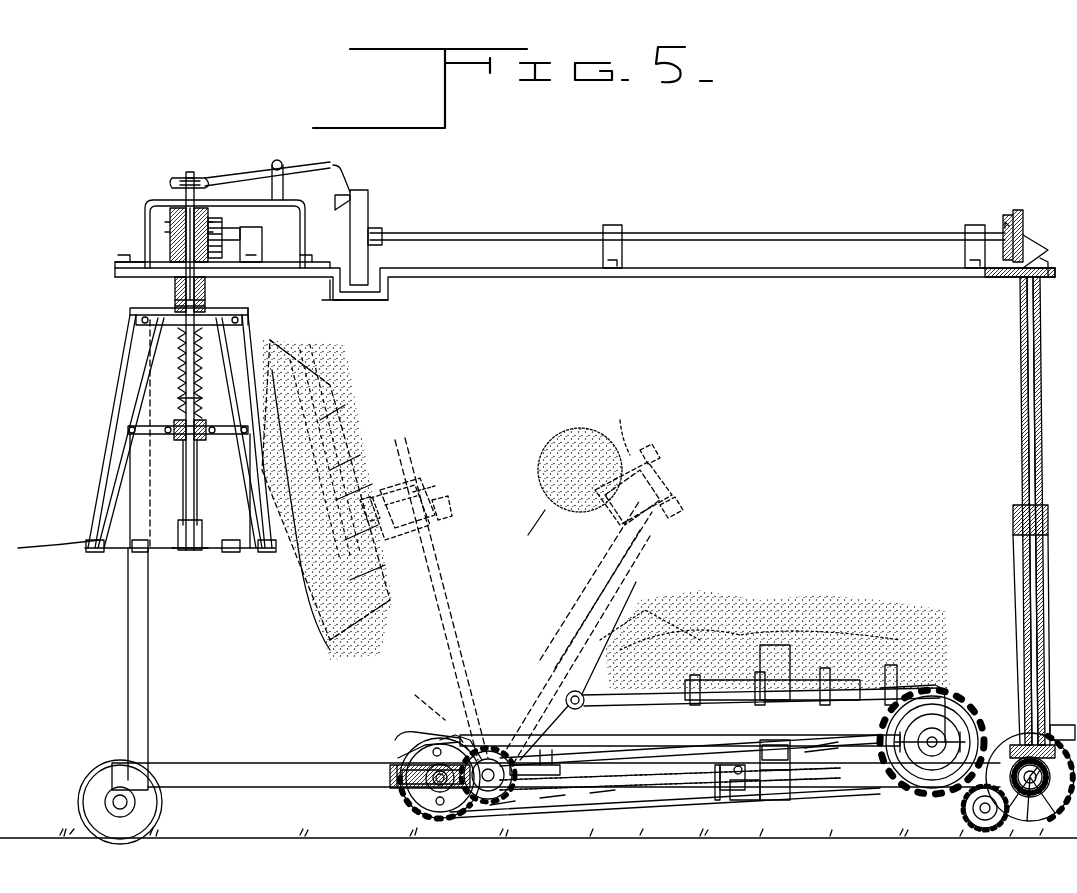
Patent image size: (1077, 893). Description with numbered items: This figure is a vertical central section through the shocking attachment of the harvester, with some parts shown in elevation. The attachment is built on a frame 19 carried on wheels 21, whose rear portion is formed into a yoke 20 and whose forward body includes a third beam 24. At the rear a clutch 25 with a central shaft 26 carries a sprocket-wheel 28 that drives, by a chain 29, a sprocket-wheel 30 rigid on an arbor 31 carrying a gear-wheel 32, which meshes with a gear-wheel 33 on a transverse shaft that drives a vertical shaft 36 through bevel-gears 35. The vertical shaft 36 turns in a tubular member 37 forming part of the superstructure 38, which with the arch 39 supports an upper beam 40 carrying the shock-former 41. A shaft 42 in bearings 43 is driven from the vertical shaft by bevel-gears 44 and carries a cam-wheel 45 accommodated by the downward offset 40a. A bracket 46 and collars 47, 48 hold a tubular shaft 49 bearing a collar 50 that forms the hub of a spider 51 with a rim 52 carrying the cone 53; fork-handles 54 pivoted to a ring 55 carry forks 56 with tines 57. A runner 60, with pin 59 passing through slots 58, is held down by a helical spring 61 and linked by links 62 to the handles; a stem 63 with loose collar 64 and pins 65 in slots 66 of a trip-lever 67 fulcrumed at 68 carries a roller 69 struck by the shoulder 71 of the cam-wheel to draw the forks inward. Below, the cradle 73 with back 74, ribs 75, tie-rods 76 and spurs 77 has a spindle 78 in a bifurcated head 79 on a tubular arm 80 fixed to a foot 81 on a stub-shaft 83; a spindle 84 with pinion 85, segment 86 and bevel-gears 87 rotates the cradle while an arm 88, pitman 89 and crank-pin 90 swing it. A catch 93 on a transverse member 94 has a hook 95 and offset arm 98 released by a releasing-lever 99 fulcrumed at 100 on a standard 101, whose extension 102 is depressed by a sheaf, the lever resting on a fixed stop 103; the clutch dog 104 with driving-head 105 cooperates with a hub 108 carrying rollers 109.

The frame 19 is at (410, 780).
The yoke 20 is at (258, 762).
The wheels 21 is at (78, 800).
The third beam 24 is at (578, 798).
The clutch 25 is at (420, 748).
The central shaft 26 is at (430, 783).
The sprocket-wheel 28 is at (398, 782).
The chain 29 is at (760, 790).
The sprocket-wheel 30 is at (900, 770).
The arbor 31 is at (922, 748).
The gear-wheel 32 is at (895, 690).
The gear-wheel 33 is at (988, 826).
The bevel-gears 35 is at (1012, 740).
The vertical shaft 36 is at (1020, 360).
The tubular member 37 is at (1020, 452).
The superstructure 38 is at (150, 636).
The arch 39 is at (136, 668).
The upper beam 40 is at (672, 278).
The downward offset 40a is at (390, 298).
The shock-former 41 is at (112, 388).
The shaft 42 is at (712, 230).
The bearings 43 is at (612, 224).
The bevel-gears 44 is at (1020, 212).
The cam-wheel 45 is at (370, 212).
The bracket 46 is at (142, 218).
The collar 47 is at (170, 222).
The collar 48 is at (210, 275).
The tubular guide or shaft 49 is at (180, 552).
The collar 50 is at (140, 320).
The spider 51 is at (150, 312).
The rim or band 52 is at (250, 318).
The cone or apron 53 is at (126, 468).
The fork-handles 54 is at (108, 440).
The ring 55 is at (130, 312).
The forks 56 is at (92, 554).
The tines 57 is at (70, 548).
The longitudinal slots 58 is at (178, 370).
The pin 59 is at (178, 440).
The runner 60 is at (206, 426).
The helical spring 61 is at (176, 400).
The links 62 is at (142, 438).
The stem 63 is at (186, 240).
The loose collar 64 is at (185, 176).
The pins 65 is at (198, 178).
The slots 66 is at (176, 182).
The trip-lever 67 is at (240, 178).
The fulcrum 68 is at (280, 162).
The roller 69 is at (352, 192).
The shoulder 71 is at (343, 234).
The cradle 73 is at (830, 690).
The back 74 is at (395, 528).
The transverse bands or ribs 75 is at (345, 460).
The tie-rods 76 is at (812, 690).
The spurs 77 is at (548, 512).
The spindle 78 is at (415, 490).
The bifurcated head 79 is at (436, 503).
The tubular arm 80 is at (440, 578).
The foot 81 is at (540, 800).
The stub-shaft 83 is at (490, 733).
The spindle 84 is at (605, 700).
The pinion 85 is at (540, 720).
The segment 86 is at (484, 750).
The bevel-gears 87 is at (398, 490).
The arm 88 is at (575, 690).
The pitman 89 is at (640, 700).
The crank-pin 90 is at (990, 705).
The catch 93 is at (735, 775).
The transverse member 94 is at (725, 802).
The hook 95 is at (720, 770).
The upwardly-offset arm 98 is at (777, 647).
The releasing-lever 99 is at (620, 690).
The fulcrum 100 is at (658, 768).
The standard 101 is at (680, 690).
The lateral extension 102 is at (778, 660).
The fixed stop 103 is at (512, 766).
The dog 104 is at (410, 736).
The driving-head 105 is at (478, 755).
The hub 108 is at (435, 700).
The rollers 109 is at (437, 748).